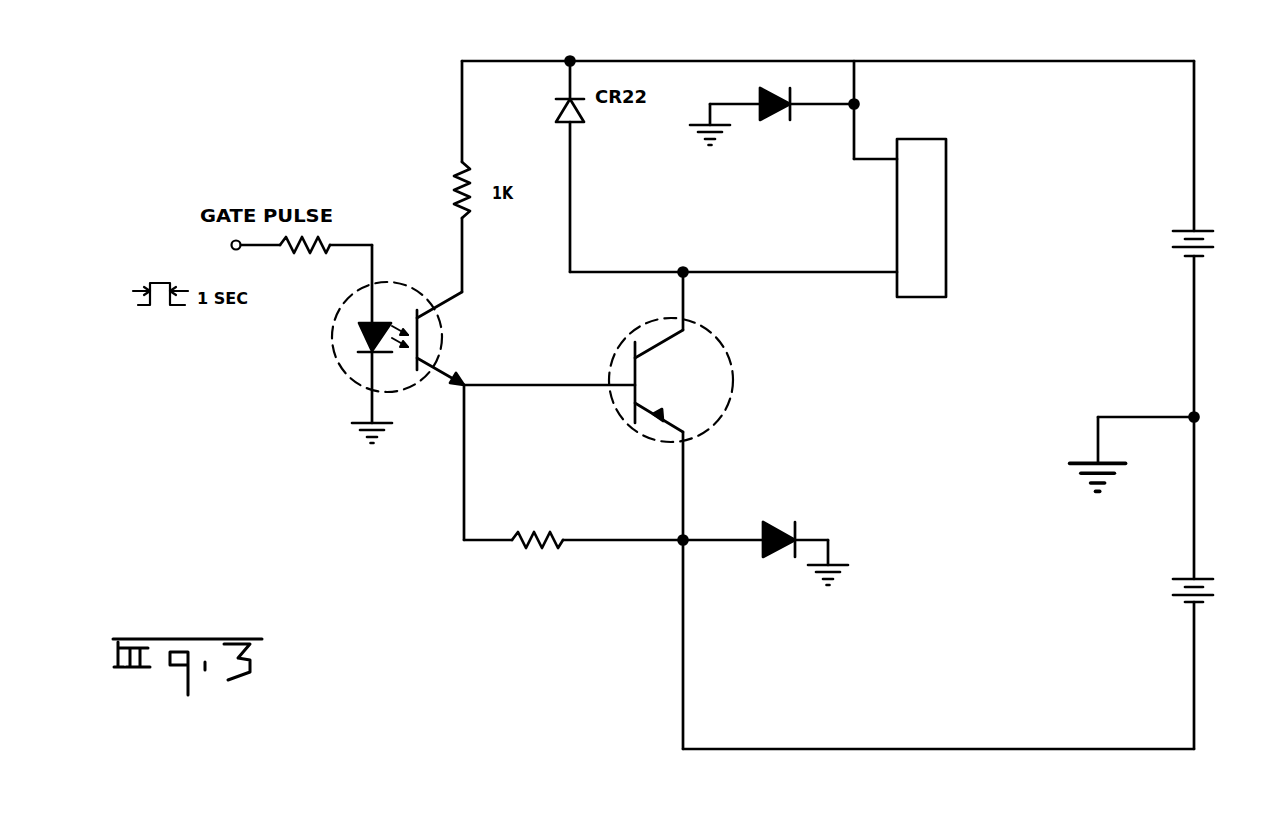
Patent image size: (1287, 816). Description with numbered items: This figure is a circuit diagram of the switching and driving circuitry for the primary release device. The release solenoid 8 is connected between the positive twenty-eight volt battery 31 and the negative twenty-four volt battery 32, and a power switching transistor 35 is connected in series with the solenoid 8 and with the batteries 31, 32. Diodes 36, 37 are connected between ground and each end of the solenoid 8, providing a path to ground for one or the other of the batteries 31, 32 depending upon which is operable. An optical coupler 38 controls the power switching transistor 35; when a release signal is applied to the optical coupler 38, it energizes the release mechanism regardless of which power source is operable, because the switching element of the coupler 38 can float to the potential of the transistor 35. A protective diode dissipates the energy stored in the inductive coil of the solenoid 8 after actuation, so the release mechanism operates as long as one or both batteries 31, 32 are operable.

The solenoid 8 is at (946, 211).
The battery 31 is at (1173, 240).
The battery 32 is at (1168, 584).
The power switching transistor 35 is at (658, 379).
The diode 36 is at (768, 115).
The diode 37 is at (768, 555).
The optical coupler 38 is at (347, 372).